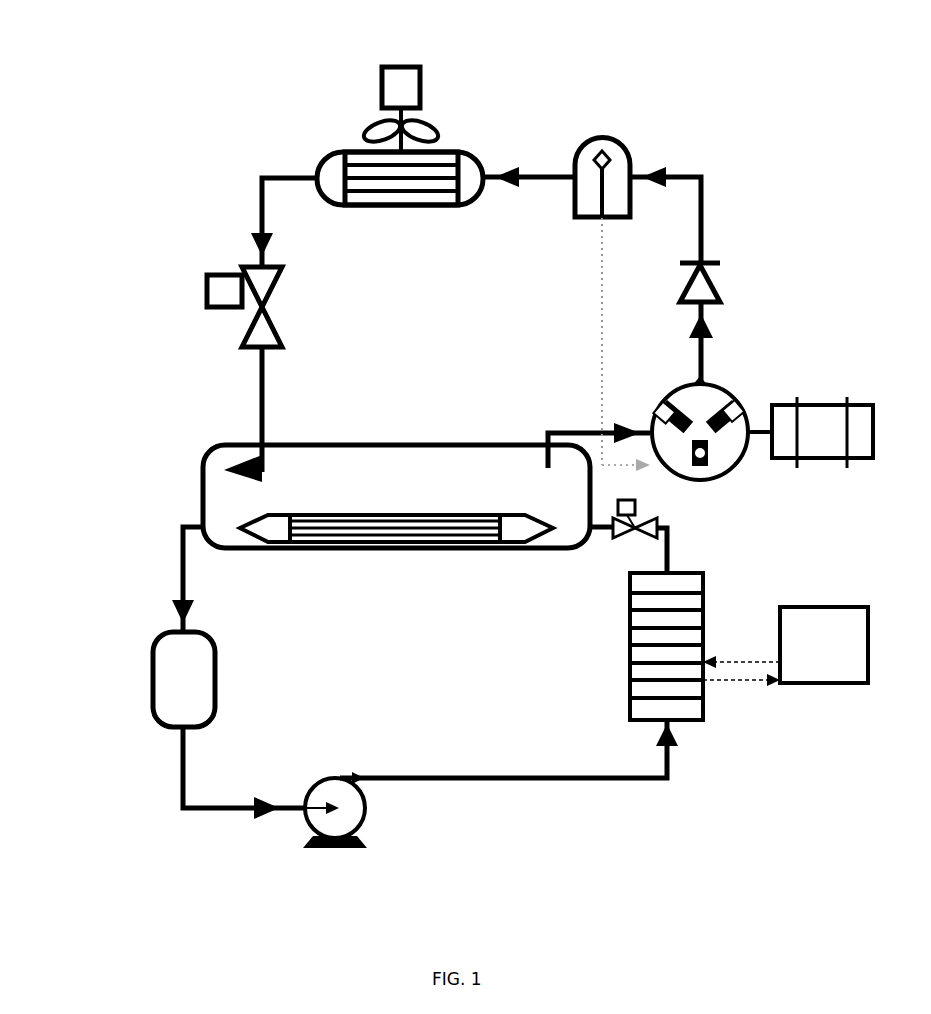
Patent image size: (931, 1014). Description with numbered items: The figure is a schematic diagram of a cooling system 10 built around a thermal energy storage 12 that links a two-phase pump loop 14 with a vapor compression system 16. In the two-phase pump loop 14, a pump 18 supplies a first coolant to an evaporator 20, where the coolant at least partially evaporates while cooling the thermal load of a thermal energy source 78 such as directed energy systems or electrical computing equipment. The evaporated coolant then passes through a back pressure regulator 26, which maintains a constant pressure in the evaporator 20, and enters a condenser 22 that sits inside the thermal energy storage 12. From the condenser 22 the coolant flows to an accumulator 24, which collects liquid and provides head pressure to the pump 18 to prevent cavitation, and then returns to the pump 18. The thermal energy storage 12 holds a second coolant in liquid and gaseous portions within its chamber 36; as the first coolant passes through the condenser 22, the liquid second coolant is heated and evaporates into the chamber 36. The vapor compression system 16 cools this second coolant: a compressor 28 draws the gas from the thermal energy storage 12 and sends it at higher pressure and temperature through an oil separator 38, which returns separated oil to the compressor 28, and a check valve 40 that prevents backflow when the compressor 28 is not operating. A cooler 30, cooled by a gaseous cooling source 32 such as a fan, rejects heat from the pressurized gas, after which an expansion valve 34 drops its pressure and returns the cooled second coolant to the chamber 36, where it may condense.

The cooling system 10 is at (112, 122).
The thermal energy storage 12 is at (205, 470).
The two-phase pump loop 14 is at (147, 827).
The vapor compression system 16 is at (254, 157).
The pump 18 is at (363, 820).
The evaporator 20 is at (705, 653).
The condenser 22 is at (258, 542).
The accumulator 24 is at (158, 653).
The back pressure regulator 26 is at (616, 541).
The compressor 28 is at (735, 394).
The cooler 30 is at (462, 150).
The gaseous cooling source 32 is at (409, 66).
The expansion valve 34 is at (221, 270).
The chamber 36 is at (393, 492).
The oil separator 38 is at (622, 150).
The check valve 40 is at (712, 290).
The thermal energy source 78 is at (834, 659).